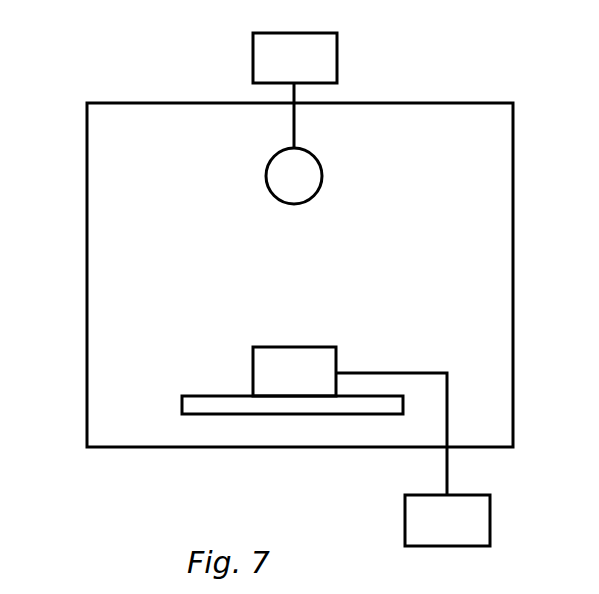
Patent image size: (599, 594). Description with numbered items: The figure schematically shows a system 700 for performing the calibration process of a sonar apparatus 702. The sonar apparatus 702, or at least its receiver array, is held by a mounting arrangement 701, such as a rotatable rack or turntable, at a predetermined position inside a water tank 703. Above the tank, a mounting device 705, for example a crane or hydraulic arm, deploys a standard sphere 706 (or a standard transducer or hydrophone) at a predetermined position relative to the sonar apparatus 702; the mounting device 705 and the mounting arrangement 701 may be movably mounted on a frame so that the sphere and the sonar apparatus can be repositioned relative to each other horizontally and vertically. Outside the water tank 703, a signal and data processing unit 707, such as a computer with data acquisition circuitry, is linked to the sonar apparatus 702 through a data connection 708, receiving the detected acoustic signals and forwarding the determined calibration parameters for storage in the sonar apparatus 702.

The system 700 is at (208, 509).
The mounting arrangement 701 is at (264, 380).
The sonar apparatus 702 is at (239, 335).
The water tank 703 is at (271, 295).
The mounting device 705 is at (244, 87).
The standard sphere 706 is at (251, 165).
The signal and data processing unit 707 is at (405, 527).
The data connection 708 is at (391, 434).